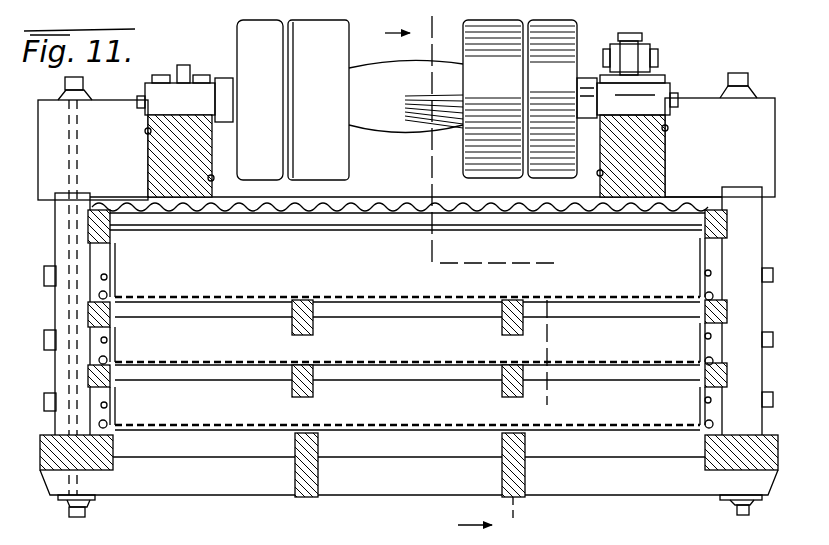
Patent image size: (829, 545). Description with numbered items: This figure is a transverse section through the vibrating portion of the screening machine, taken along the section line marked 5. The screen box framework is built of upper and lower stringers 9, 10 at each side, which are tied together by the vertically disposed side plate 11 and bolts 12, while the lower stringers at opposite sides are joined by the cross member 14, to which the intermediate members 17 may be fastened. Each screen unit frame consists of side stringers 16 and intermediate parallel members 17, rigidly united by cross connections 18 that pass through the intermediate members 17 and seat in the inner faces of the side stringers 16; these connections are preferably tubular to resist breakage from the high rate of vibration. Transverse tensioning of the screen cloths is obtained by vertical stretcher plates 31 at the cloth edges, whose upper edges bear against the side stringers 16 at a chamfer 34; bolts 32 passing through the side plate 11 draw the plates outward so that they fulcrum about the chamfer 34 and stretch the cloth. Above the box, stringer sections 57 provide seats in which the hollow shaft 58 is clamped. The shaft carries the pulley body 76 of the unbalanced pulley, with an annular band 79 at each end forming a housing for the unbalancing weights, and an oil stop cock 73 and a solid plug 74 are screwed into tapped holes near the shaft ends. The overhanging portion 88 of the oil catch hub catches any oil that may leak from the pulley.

The section line 5- 5 is at (486, 278).
The upper stringer 9 is at (46, 143).
The lower stringer 10 is at (42, 455).
The side plate 11 is at (55, 305).
The bolt 12 is at (731, 84).
The cross member 14 is at (446, 487).
The side stringer 16 is at (112, 312).
The intermediate member 17 is at (293, 332).
The cross connection 18 is at (416, 314).
The stretcher plate 31 is at (118, 272).
The stretcher bolt 32 is at (93, 268).
The chamfer 34 is at (108, 250).
The stringer section 57 is at (150, 180).
The hollow shaft 58 is at (660, 83).
The oil stop cock 73 is at (634, 54).
The solid plug 74 is at (185, 72).
The pulley body 76 is at (372, 70).
The annular band 79 is at (468, 80).
The overhanging portion 88 is at (407, 100).